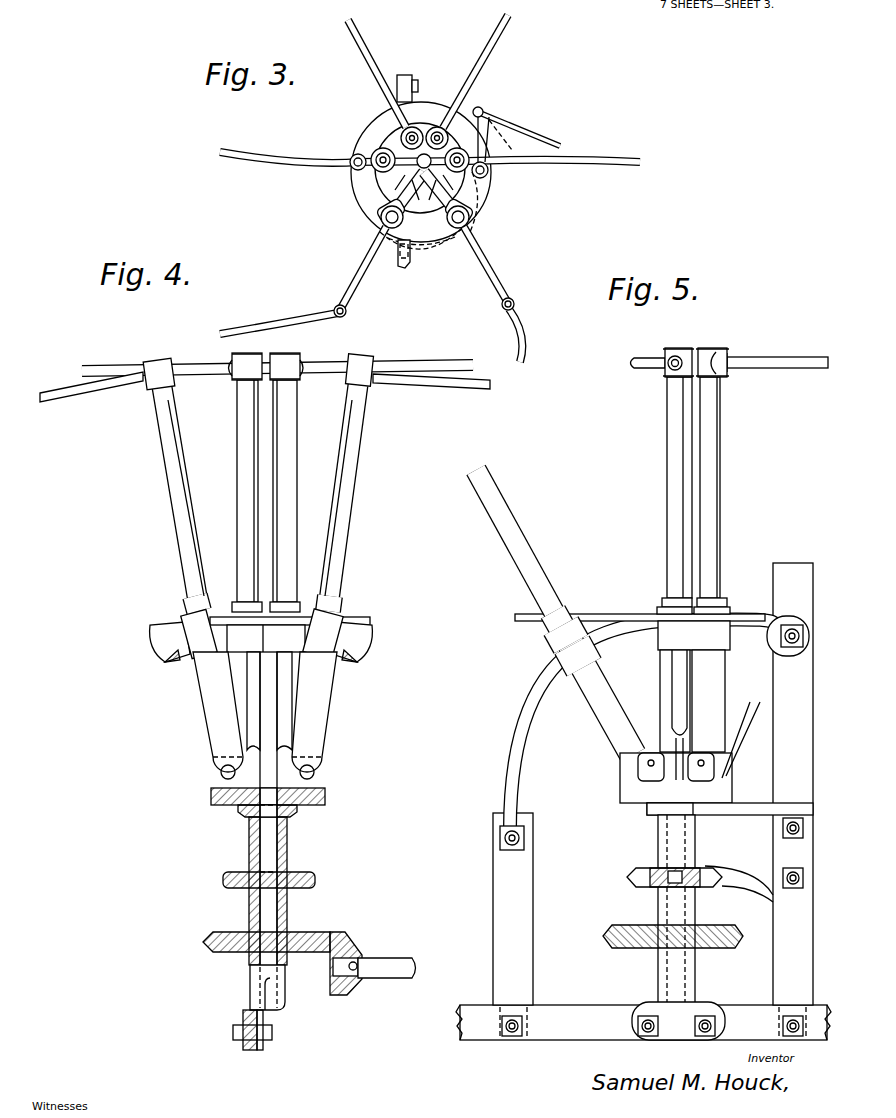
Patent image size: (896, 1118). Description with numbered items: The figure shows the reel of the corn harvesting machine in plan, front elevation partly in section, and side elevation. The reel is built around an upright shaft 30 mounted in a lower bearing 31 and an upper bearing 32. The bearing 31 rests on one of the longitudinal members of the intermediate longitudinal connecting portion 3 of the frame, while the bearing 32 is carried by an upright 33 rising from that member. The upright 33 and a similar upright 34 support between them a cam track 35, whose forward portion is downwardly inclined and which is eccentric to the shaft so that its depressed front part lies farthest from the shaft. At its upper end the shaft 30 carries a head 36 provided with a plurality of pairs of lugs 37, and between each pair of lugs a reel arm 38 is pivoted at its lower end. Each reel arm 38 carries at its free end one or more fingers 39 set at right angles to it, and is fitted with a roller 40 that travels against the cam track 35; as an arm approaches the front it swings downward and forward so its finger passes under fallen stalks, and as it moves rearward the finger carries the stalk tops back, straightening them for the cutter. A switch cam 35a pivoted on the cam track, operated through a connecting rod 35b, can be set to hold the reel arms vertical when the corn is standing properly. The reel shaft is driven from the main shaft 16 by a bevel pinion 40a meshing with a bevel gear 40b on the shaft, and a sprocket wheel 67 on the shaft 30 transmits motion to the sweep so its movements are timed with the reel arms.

In FIG. 4, the intermediate longitudinal connecting portion 3 is at (243, 1028).
In FIG. 5, the intermediate longitudinal connecting portion 3 is at (553, 1010).
In FIG. 4, the main shaft 16 is at (398, 959).
In FIG. 3, the upright shaft 30 is at (418, 154).
In FIG. 4, the upright shaft 30 is at (268, 855).
In FIG. 5, the upright shaft 30 is at (690, 854).
In FIG. 4, the bearing 31 is at (285, 1010).
In FIG. 5, the bearing 31 is at (695, 1000).
In FIG. 4, the bearing 32 is at (290, 842).
In FIG. 5, the bearing 32 is at (658, 835).
In FIG. 3, the upright 33 is at (412, 78).
In FIG. 5, the upright 33 is at (783, 730).
In FIG. 3, the upright 34 is at (404, 268).
In FIG. 5, the upright 34 is at (494, 846).
In FIG. 3, the cam track 35 is at (374, 202).
In FIG. 4, the cam track 35 is at (152, 638).
In FIG. 5, the cam track 35 is at (518, 712).
In FIG. 3, the switch cam 35a is at (463, 248).
In FIG. 4, the switch cam 35a is at (372, 620).
In FIG. 5, the switch cam 35a is at (605, 614).
In FIG. 3, the connecting rod 35b is at (540, 134).
In FIG. 3, the head 36 is at (398, 198).
In FIG. 4, the head 36 is at (213, 805).
In FIG. 5, the head 36 is at (625, 790).
In FIG. 3, the lugs 37 is at (424, 194).
In FIG. 4, the lugs 37 is at (214, 778).
In FIG. 5, the lugs 37 is at (636, 772).
In FIG. 3, the reel arm 38 is at (366, 145).
In FIG. 4, the reel arm 38 is at (237, 431).
In FIG. 5, the reel arm 38 is at (705, 434).
In FIG. 3, the fingers 39 is at (480, 48).
In FIG. 4, the fingers 39 is at (52, 395).
In FIG. 5, the fingers 39 is at (735, 350).
In FIG. 3, the roller 40 is at (385, 190).
In FIG. 4, the roller 40 is at (210, 615).
In FIG. 5, the roller 40 is at (693, 650).
In FIG. 4, the bevel pinion 40a is at (350, 956).
In FIG. 4, the bevel gear 40b is at (312, 932).
In FIG. 5, the bevel gear 40b is at (620, 928).
In FIG. 4, the sprocket wheel 67 is at (230, 878).
In FIG. 5, the sprocket wheel 67 is at (713, 888).